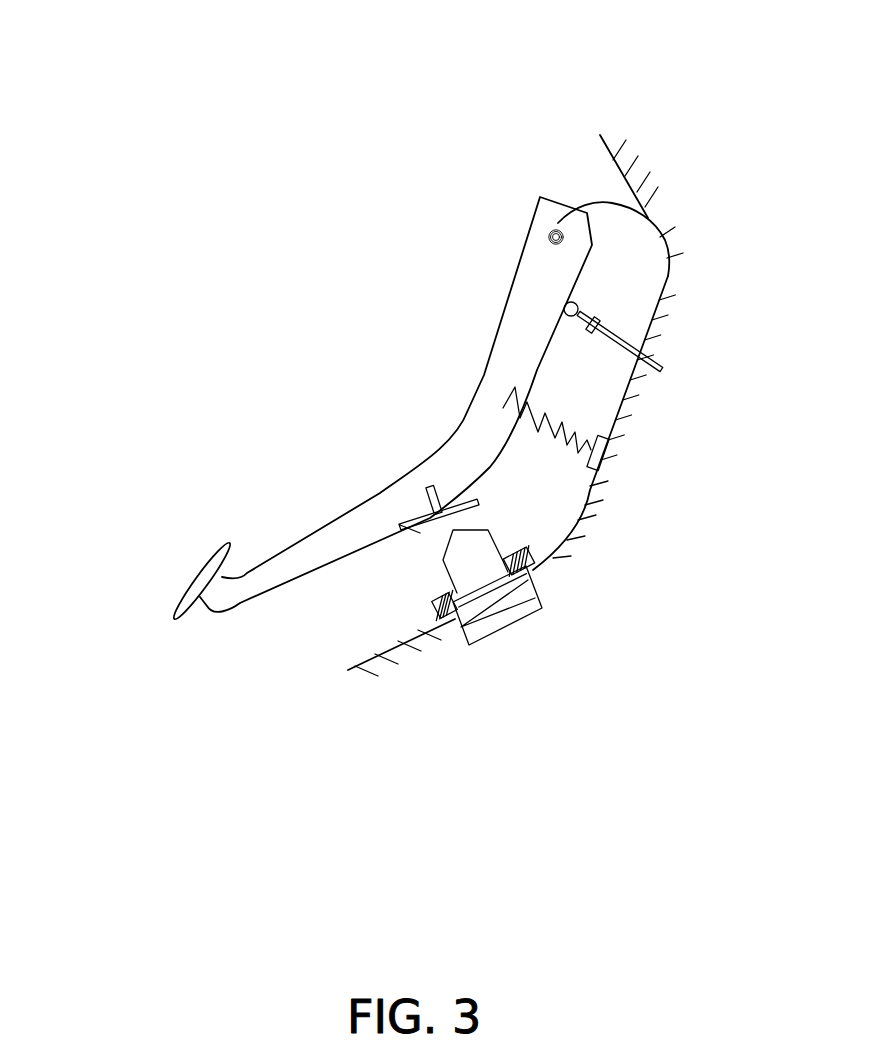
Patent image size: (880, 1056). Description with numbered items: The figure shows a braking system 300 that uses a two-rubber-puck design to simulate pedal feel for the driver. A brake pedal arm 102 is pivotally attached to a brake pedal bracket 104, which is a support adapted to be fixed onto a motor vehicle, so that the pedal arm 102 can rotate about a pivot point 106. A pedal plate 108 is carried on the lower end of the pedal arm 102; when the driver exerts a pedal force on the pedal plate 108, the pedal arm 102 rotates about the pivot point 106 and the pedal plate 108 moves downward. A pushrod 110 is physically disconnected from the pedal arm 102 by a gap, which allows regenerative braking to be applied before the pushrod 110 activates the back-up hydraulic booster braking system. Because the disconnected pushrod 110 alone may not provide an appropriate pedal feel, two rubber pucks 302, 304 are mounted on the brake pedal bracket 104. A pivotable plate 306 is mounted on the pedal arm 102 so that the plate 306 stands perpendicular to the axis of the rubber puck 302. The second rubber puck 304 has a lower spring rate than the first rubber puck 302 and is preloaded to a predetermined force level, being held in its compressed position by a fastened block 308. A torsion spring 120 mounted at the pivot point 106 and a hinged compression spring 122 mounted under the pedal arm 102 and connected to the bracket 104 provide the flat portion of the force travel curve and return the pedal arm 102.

The braking system 300 is at (143, 66).
The brake pedal arm 102 is at (483, 363).
The brake pedal bracket 104 is at (658, 230).
The pivot point 106 is at (546, 234).
The pedal plate 108 is at (190, 577).
The pushrod 110 is at (583, 433).
The torsion spring 120 is at (605, 202).
The hinged compression spring 122 is at (610, 327).
The rubber puck 302 is at (473, 530).
The second rubber puck 304 is at (490, 642).
The pivotable plate 306 is at (430, 513).
The fastened block 308 is at (432, 598).